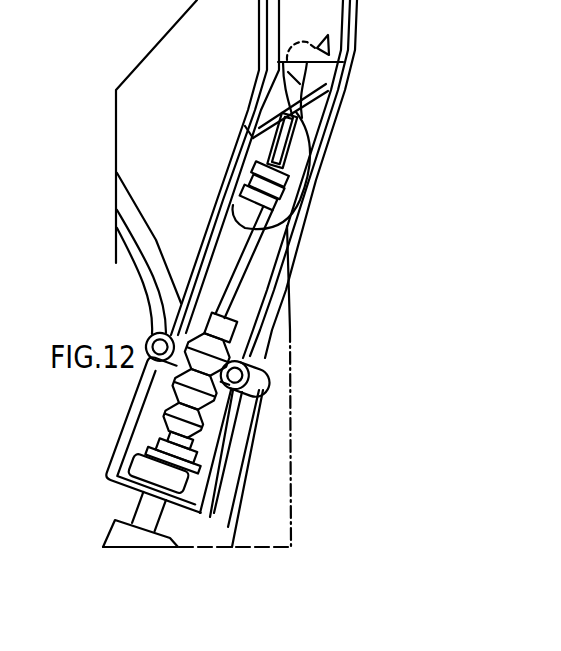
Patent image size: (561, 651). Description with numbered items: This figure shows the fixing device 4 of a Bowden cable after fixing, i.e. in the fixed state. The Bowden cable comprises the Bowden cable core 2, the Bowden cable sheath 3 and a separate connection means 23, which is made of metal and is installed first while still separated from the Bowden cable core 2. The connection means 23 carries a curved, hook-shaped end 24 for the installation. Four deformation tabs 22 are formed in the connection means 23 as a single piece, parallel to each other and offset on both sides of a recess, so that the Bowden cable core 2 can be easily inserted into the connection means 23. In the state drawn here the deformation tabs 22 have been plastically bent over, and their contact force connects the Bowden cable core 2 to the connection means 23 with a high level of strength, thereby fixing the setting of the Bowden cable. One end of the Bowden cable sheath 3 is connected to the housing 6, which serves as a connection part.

The Bowden cable core 2 is at (233, 297).
The Bowden cable sheath 3 is at (120, 540).
The fixing device 4 is at (289, 216).
The housing 6 is at (283, 291).
The deformation tabs 22 is at (277, 177).
The connection means 23 is at (284, 89).
The curved, hook-shaped end 24 is at (300, 67).